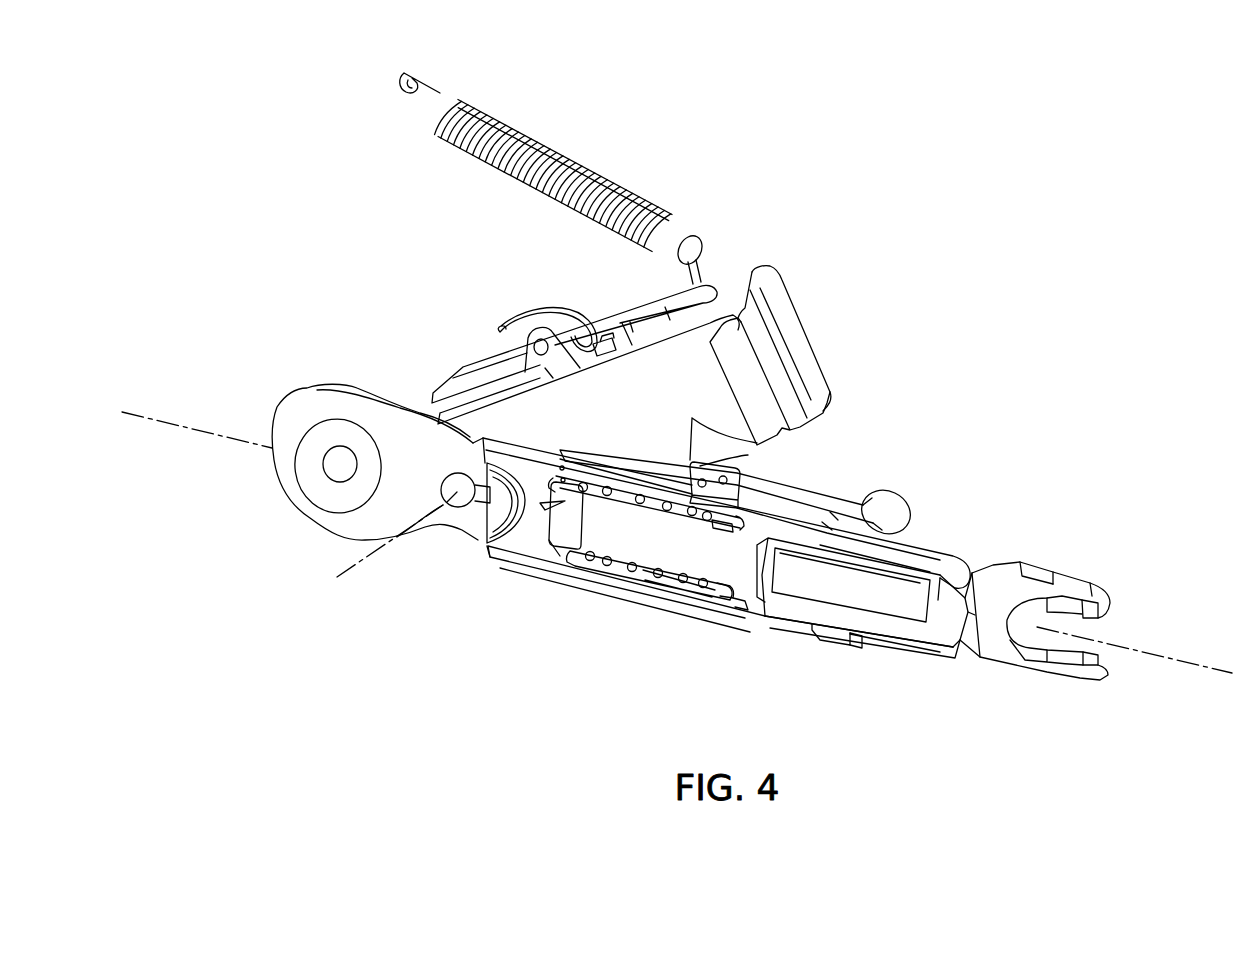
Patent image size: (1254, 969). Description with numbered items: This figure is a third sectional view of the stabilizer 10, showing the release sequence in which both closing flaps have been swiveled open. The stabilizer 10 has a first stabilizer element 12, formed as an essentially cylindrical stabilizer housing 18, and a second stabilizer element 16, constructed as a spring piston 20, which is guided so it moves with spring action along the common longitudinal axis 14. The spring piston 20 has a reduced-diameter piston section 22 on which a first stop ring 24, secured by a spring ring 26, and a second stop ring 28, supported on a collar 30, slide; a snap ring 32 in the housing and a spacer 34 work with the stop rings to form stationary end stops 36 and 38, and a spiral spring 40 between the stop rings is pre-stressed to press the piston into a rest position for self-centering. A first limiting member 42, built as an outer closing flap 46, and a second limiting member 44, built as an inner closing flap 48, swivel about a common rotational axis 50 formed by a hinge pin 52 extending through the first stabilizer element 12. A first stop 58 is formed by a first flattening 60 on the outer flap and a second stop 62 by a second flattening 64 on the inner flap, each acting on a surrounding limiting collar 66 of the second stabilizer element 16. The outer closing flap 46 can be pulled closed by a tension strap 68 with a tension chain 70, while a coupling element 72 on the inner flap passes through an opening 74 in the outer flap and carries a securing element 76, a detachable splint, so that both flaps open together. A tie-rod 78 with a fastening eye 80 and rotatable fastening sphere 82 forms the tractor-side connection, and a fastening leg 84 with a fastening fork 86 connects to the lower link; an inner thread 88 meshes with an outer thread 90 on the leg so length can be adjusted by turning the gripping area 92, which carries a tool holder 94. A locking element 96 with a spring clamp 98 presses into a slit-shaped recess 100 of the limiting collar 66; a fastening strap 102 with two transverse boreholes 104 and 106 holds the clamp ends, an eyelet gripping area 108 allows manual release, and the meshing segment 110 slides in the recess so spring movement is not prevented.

The stabilizer 10 is at (929, 70).
The first stabilizer element 12 is at (373, 594).
The longitudinal axis 14 is at (1228, 670).
The second stabilizer element 16 is at (770, 652).
The stabilizer housing 18 is at (582, 567).
The spring piston 20 is at (440, 507).
The piston section 22 is at (620, 570).
The first stop ring 24 is at (567, 488).
The spring ring 26 is at (545, 553).
The second stop ring 28 is at (717, 587).
The collar 30 is at (717, 583).
The snap ring 32 is at (565, 572).
The spacer 34 is at (672, 585).
The end stop 36 is at (597, 545).
The end stop 38 is at (697, 533).
The spiral spring 40 is at (630, 568).
The first limiting member 42 is at (550, 335).
The second limiting member 44 is at (418, 396).
The outer closing flap 46 is at (478, 392).
The inner closing flap 48 is at (490, 363).
The rotational axis 50 is at (333, 577).
The hinge pin 52 is at (453, 487).
The first stop 58 is at (815, 317).
The first flattening 60 is at (778, 327).
The second stop 62 is at (781, 388).
The second flattening 64 is at (745, 340).
The limiting collar 66 is at (858, 633).
The tension strap 68 is at (570, 149).
The tension chain 70 is at (416, 72).
The coupling element 72 is at (537, 330).
The opening 74 is at (572, 340).
The securing element 76 is at (562, 330).
The tie-rod 78 is at (339, 452).
The fastening eye 80 is at (292, 416).
The fastening sphere 82 is at (330, 427).
The fastening leg 84 is at (1053, 567).
The fastening fork 86 is at (1093, 588).
The inner thread 88 is at (910, 640).
The outer thread 90 is at (912, 648).
The gripping area 92 is at (930, 555).
The tool holder 94 is at (975, 560).
The locking element 96 is at (765, 443).
The spring clamp 98 is at (900, 488).
The recess 100 is at (827, 640).
The fastening strap 102 is at (712, 473).
The transverse borehole 104 is at (676, 444).
The transverse borehole 106 is at (726, 465).
The gripping area 108 is at (913, 510).
The meshing segment 110 is at (827, 510).